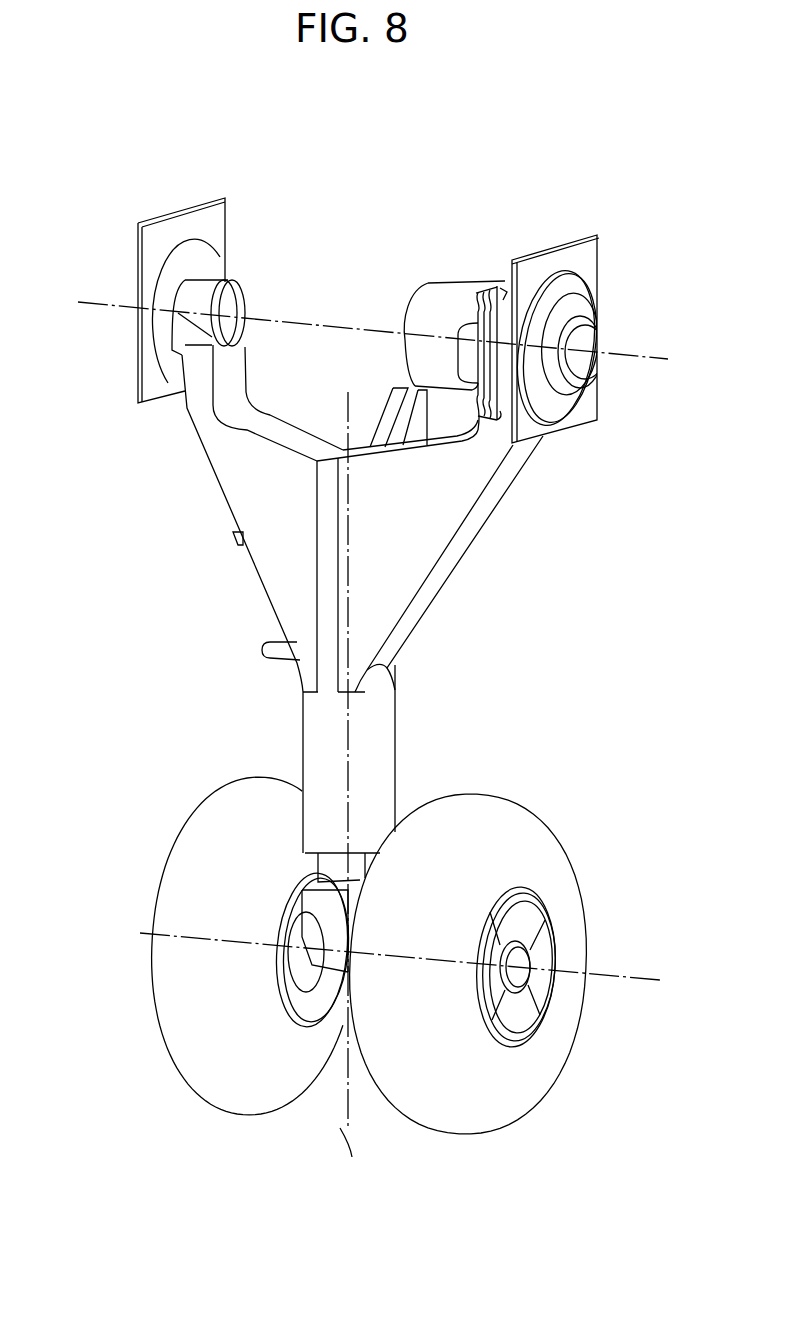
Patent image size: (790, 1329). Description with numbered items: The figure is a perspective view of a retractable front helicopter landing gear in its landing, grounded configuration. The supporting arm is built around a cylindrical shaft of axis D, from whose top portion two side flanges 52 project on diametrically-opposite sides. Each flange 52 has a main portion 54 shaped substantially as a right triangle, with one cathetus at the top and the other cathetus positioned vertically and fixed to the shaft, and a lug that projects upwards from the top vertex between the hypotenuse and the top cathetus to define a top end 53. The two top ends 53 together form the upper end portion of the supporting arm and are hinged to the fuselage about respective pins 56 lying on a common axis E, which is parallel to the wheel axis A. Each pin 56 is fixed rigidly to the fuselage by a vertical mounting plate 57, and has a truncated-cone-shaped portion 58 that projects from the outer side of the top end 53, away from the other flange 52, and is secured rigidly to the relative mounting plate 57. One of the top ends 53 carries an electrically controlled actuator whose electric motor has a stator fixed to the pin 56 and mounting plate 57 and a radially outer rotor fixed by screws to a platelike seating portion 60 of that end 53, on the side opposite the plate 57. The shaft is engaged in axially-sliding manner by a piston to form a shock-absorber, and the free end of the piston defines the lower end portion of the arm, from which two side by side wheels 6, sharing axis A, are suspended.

The wheel 6 is at (163, 1022).
The side flange 52 is at (243, 492).
The top end 53 is at (223, 363).
The main portion 54 is at (249, 554).
The pin 56 is at (248, 310).
The mounting plate 57 is at (212, 218).
The truncated-cone-shaped portion 58 is at (553, 396).
The platelike seating portion 60 is at (495, 290).
The wheel axis A is at (630, 975).
The shaft axis D is at (350, 1160).
The hinge axis E is at (665, 360).